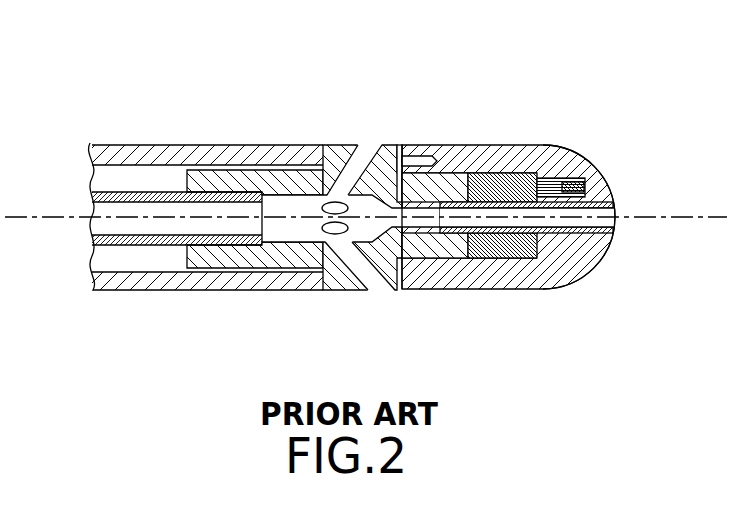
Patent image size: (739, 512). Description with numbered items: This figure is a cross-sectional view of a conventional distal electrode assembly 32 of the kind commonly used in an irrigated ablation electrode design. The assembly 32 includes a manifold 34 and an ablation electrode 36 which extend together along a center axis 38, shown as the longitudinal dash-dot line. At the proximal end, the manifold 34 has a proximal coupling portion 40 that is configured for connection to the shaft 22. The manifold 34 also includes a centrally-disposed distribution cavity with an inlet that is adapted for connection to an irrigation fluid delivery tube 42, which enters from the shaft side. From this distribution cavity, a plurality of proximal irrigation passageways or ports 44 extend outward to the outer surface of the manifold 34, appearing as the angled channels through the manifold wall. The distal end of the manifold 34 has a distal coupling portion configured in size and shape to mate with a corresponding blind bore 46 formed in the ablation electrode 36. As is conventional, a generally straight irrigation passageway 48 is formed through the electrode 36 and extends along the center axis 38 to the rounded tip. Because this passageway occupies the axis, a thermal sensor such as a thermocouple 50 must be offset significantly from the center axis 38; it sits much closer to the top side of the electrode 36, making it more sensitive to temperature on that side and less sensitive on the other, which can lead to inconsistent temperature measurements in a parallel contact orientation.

The shaft 22 is at (137, 289).
The distal electrode assembly 32 is at (366, 182).
The manifold 34 is at (348, 147).
The ablation electrode 36 is at (578, 148).
The center axis 38 is at (682, 219).
The proximal coupling portion 40 is at (230, 183).
The irrigation fluid delivery tube 42 is at (92, 190).
The proximal irrigation passageways or ports 44 is at (380, 150).
The blind bore 46 is at (464, 172).
The irrigation passageway 48 is at (597, 222).
The thermocouple 50 is at (606, 180).